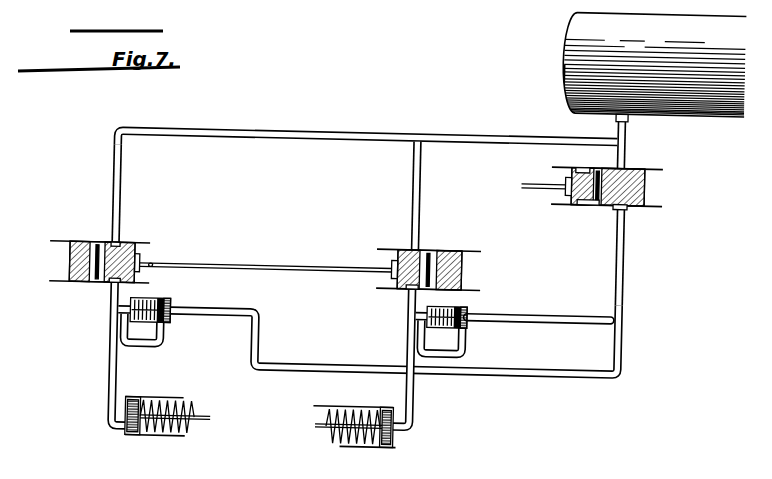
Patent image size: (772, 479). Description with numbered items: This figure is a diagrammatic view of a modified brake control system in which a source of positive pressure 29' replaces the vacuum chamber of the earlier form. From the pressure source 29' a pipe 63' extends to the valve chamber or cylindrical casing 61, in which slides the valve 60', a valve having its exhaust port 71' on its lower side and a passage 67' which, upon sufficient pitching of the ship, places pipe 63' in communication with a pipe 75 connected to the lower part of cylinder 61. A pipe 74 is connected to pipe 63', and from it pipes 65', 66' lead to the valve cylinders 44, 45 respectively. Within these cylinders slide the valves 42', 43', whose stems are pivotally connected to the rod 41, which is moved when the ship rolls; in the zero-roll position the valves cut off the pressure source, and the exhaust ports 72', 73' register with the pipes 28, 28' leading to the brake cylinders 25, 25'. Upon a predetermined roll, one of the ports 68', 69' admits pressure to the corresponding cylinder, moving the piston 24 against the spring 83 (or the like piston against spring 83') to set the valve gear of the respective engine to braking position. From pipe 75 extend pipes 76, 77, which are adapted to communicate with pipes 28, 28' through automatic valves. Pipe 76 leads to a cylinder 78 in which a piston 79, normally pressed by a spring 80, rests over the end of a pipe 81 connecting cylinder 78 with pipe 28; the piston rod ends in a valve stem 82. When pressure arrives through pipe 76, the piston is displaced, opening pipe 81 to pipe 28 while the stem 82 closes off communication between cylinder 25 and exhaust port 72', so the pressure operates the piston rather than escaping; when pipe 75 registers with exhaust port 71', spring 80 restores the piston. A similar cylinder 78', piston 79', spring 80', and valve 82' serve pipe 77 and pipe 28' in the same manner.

The source of positive pressure 29' is at (654, 68).
The pipe 63' is at (647, 146).
The pipe 74 is at (312, 137).
The pipe 66' is at (141, 193).
The pipe 65' is at (438, 196).
The cylindrical casing 61 is at (579, 168).
The valve 60' is at (604, 186).
The passage 67' is at (581, 219).
The exhaust port 71' is at (644, 224).
The cylinder 45 is at (130, 247).
The port 69' is at (83, 246).
The valve 43' is at (89, 261).
The exhaust port 73' is at (91, 295).
The rod 41 is at (268, 269).
The cylinder 44 is at (402, 251).
The port 68' is at (456, 257).
The valve 42' is at (439, 270).
The exhaust port 72' is at (384, 301).
The spring 80 is at (447, 307).
The cylinder 78 is at (483, 313).
The valve stem 82 is at (406, 334).
The piston 79 is at (444, 330).
The pipe 81 is at (464, 339).
The pipe 76 is at (551, 320).
The pipe 77 is at (528, 374).
The pipe 75 is at (630, 265).
The pipe 28 is at (423, 358).
The pipe 28' is at (94, 353).
The spring 83 is at (349, 411).
The spring 83' is at (175, 403).
The piston 24 is at (384, 447).
The cylinder 25 is at (401, 443).
The cylinder 25' is at (155, 432).
The spring 80' is at (146, 321).
The piston 79' is at (183, 323).
The cylinder 78' is at (186, 298).
The valve 82' is at (102, 329).